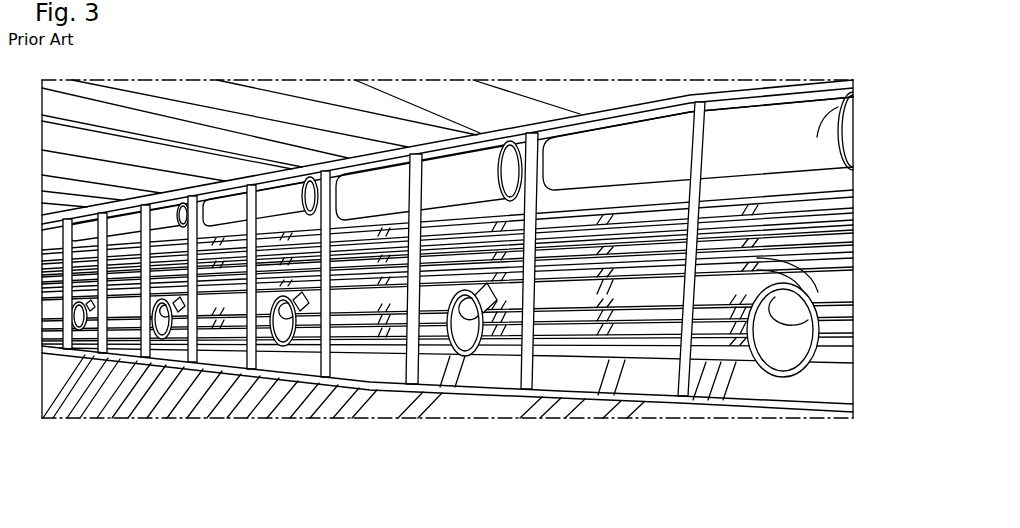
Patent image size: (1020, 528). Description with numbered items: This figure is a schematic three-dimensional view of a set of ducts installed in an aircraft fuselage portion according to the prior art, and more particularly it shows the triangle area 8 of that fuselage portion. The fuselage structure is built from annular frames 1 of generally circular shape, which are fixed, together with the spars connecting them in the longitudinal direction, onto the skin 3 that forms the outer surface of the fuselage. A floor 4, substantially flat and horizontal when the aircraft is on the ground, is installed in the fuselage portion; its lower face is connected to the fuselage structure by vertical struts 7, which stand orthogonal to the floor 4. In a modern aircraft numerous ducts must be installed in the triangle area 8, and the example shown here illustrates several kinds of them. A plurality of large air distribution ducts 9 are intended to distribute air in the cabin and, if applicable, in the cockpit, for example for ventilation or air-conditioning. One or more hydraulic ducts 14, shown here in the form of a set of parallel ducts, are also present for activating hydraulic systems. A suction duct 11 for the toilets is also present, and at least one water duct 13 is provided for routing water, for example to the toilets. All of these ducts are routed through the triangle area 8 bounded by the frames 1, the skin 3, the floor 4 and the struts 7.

The annular frames 1 is at (822, 264).
The skin 3 is at (846, 213).
The floor 4 is at (520, 106).
The vertical struts 7 is at (673, 392).
The triangle area 8 is at (836, 275).
The large air distribution ducts 9 is at (853, 118).
The suction duct 11 is at (827, 193).
The water duct 13 is at (642, 353).
The hydraulic ducts 14 is at (850, 221).